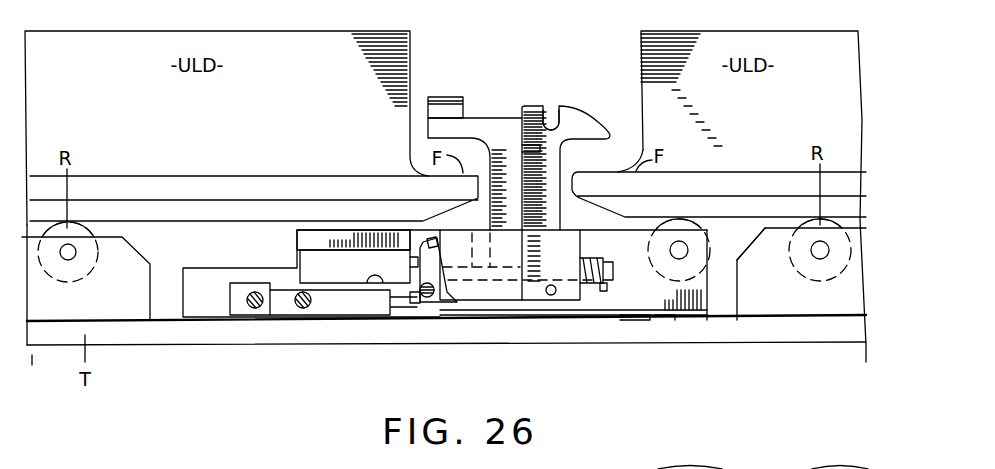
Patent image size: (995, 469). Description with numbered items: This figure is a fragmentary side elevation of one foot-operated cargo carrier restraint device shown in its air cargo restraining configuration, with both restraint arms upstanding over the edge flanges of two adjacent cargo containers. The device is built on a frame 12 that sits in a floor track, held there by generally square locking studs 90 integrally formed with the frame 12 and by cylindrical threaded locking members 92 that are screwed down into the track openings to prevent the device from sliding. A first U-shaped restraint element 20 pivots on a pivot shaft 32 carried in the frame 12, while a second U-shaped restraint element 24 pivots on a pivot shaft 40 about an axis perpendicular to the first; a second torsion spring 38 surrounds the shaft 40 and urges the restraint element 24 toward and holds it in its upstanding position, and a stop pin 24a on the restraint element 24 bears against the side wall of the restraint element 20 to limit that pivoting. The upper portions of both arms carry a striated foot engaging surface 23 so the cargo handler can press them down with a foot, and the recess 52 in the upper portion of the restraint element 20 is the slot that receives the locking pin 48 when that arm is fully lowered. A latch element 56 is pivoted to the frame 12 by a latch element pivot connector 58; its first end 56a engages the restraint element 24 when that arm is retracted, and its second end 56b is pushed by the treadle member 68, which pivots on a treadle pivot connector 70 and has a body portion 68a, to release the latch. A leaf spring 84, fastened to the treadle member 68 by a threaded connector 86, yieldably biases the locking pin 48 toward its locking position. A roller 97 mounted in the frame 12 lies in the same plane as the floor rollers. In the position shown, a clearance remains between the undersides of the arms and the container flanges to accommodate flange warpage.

The frame 12 is at (216, 259).
The first restraint element 20 is at (585, 119).
The striated foot engaging surface 23 is at (437, 96).
The second restraint element 24 is at (455, 96).
The stop pin 24a is at (528, 144).
The pivot shaft 32 is at (551, 295).
The second torsion spring 38 is at (607, 288).
The pivot shaft 40 is at (611, 267).
The locking pin 48 is at (372, 276).
The recess 52 is at (551, 114).
The latch element 56 is at (448, 292).
The first end 56a is at (432, 238).
The second end 56b is at (411, 306).
The latch element pivot connector 58 is at (430, 300).
The treadle member 68 is at (345, 233).
The body portion 68a is at (310, 243).
The treadle pivot connector 70 is at (248, 297).
The leaf spring 84 is at (335, 305).
The threaded connector 86 is at (305, 312).
The locking studs 90 is at (667, 318).
The locking members 92 is at (263, 318).
The roller 97 is at (718, 240).